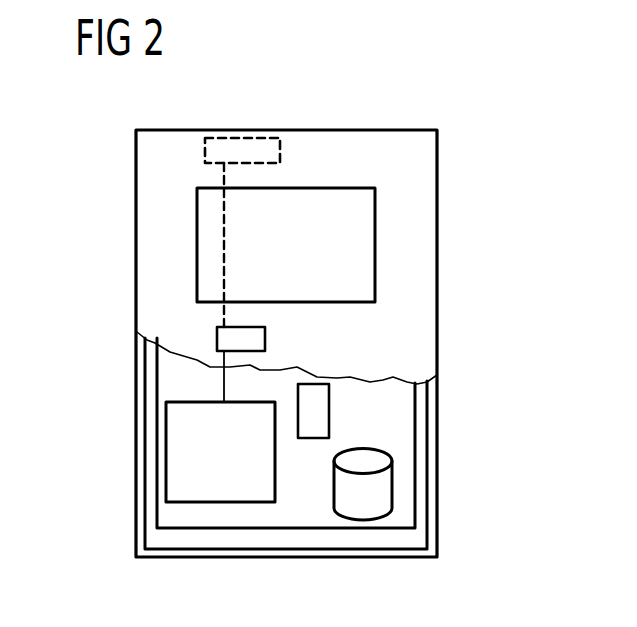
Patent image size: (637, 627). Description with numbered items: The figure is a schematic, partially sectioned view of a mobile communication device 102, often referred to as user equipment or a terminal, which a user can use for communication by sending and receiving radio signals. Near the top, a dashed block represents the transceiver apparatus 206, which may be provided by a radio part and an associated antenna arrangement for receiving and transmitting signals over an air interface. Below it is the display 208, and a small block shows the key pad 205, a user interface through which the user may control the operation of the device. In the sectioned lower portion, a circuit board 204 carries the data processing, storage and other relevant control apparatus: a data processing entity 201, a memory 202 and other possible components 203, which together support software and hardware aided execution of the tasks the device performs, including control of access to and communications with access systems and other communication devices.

The communication device 102 is at (284, 130).
The transceiver apparatus 206 is at (281, 152).
The display 208 is at (197, 245).
The key pad 205 is at (217, 339).
The circuit board 204 is at (167, 517).
The data processing entity 201 is at (166, 452).
The other possible components 203 is at (330, 398).
The memory 202 is at (393, 485).